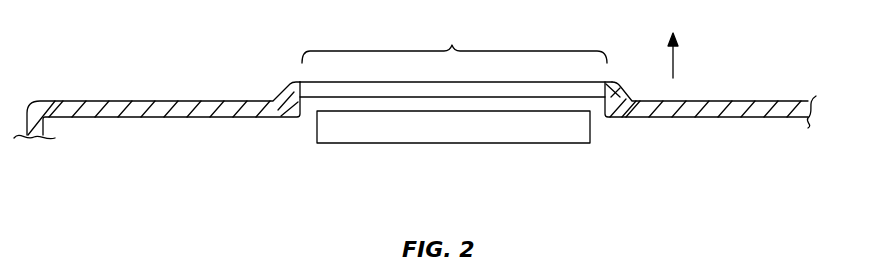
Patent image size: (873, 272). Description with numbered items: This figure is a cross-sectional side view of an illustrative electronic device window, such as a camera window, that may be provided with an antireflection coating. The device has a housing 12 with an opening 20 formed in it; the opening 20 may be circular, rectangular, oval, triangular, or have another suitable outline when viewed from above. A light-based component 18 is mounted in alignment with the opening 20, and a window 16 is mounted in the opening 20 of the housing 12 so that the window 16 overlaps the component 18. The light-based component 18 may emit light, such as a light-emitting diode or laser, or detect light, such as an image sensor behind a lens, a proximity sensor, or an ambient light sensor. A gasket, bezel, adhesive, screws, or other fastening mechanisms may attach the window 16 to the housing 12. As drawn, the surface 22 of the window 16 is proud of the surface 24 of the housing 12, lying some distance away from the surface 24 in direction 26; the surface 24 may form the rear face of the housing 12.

The housing 12 is at (148, 101).
The window 16 is at (528, 90).
The light-based component 18 is at (382, 133).
The opening 20 is at (454, 44).
The surface of window 22 is at (342, 82).
The surface of housing 24 is at (240, 101).
The direction 26 is at (675, 54).